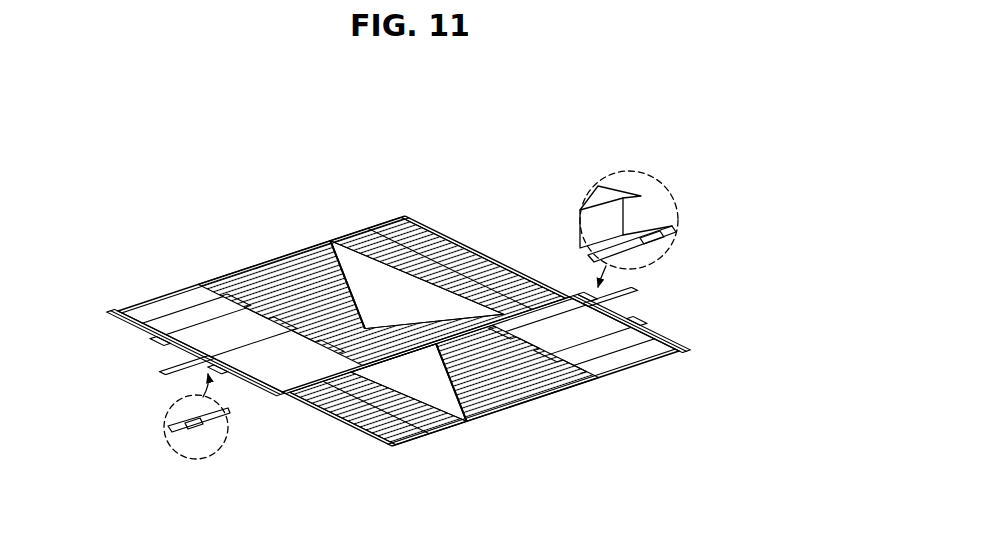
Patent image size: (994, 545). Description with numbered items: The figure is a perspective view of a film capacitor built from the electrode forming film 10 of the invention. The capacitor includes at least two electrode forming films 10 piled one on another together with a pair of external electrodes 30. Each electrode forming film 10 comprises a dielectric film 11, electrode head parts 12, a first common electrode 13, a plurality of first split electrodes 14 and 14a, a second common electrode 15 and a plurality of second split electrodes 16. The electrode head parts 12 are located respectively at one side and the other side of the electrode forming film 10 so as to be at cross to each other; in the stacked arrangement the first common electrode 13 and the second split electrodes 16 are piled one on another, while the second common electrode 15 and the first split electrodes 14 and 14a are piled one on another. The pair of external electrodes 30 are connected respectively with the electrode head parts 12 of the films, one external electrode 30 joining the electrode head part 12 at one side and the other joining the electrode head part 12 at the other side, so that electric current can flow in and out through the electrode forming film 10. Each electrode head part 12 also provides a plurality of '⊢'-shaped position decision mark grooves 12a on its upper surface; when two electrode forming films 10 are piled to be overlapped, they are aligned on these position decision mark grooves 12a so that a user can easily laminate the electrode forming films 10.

The electrode forming film 10 is at (450, 230).
The dielectric film 11 is at (472, 262).
The electrode head part 12 is at (123, 317).
The position decision mark groove 12a is at (165, 338).
The first common electrode 13 is at (177, 307).
The first split electrode 14 is at (227, 281).
The first split electrode 14a is at (260, 297).
The second common electrode 15 is at (317, 253).
The second split electrode 16 is at (400, 245).
The external electrode 30 is at (160, 368).